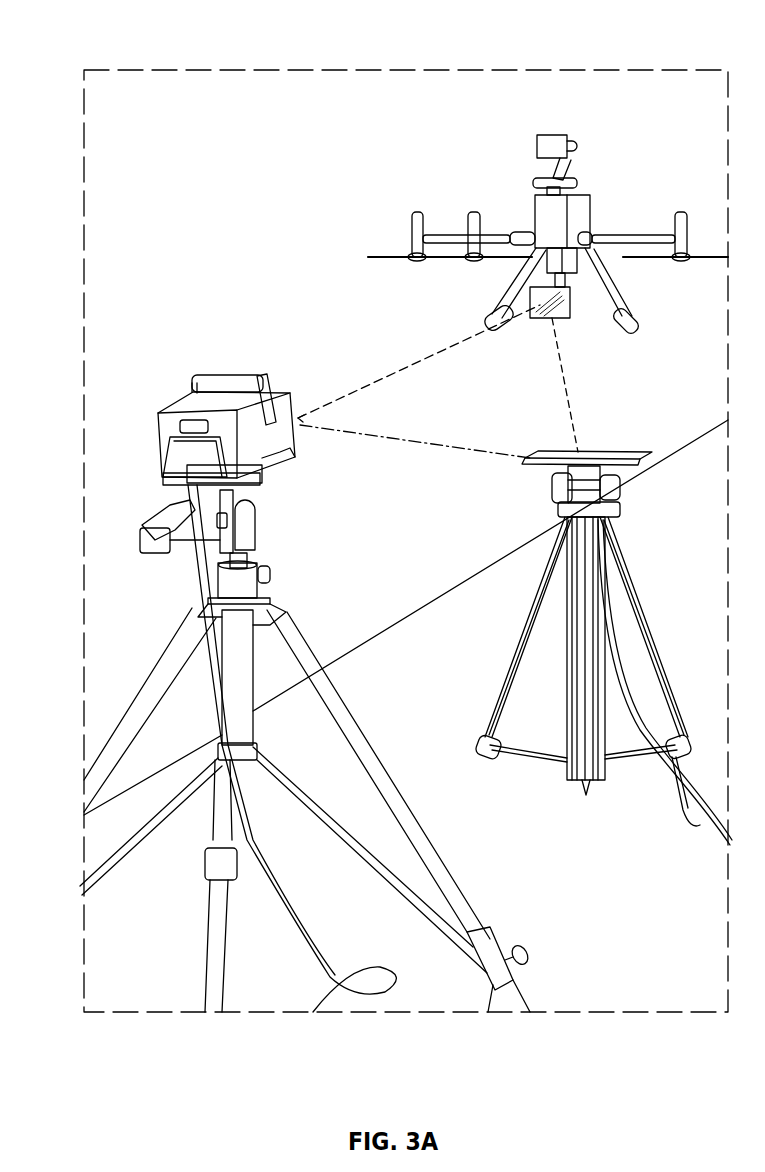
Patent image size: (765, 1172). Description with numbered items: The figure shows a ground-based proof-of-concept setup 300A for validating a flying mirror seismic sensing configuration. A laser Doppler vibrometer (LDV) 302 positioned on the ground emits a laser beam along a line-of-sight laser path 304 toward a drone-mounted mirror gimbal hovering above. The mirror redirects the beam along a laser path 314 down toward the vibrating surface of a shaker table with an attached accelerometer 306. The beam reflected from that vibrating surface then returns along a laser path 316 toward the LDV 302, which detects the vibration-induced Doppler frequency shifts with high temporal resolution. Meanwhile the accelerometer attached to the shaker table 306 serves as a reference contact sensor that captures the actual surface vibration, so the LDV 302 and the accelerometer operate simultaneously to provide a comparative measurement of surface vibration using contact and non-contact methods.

The proof-of-concept setup 300A is at (146, 30).
The laser Doppler vibrometer (LDV) 302 is at (213, 372).
The laser path 304 is at (385, 380).
The shaker table with attached accelerometer 306 is at (553, 483).
The laser path 314 is at (565, 392).
The laser path 316 is at (508, 452).